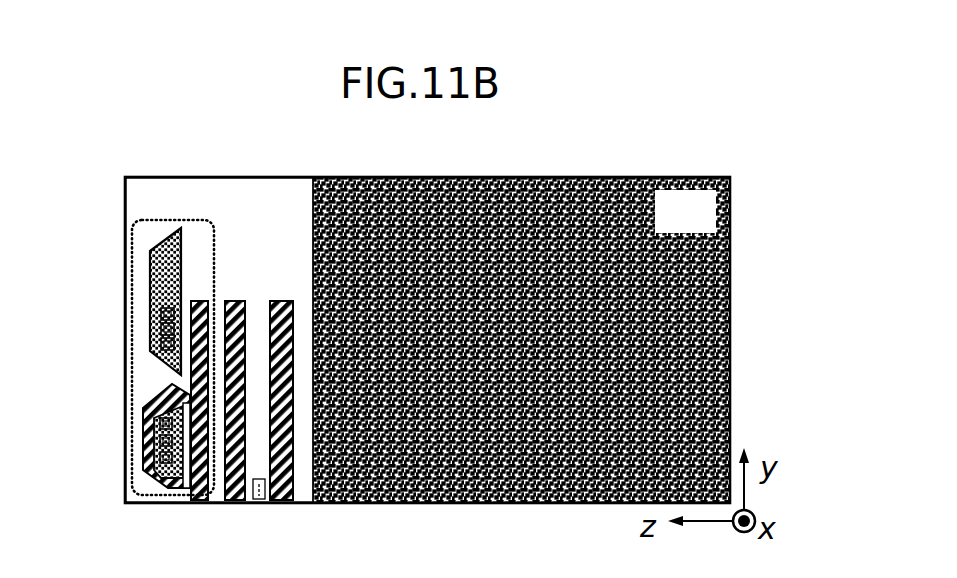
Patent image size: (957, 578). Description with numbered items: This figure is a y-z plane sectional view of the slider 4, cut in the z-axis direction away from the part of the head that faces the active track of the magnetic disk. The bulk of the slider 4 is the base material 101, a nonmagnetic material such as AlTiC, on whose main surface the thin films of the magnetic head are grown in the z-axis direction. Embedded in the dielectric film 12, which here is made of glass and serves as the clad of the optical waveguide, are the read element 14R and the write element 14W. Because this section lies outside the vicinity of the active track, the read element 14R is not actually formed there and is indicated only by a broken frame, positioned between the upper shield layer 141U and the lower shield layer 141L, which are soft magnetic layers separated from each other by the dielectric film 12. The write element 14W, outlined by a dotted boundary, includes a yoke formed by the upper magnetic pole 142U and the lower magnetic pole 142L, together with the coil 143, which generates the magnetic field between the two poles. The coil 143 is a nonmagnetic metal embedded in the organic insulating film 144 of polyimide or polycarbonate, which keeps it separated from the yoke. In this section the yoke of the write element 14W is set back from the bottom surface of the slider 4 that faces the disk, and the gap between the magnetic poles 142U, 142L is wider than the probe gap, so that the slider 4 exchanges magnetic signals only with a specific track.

The slider 4 is at (690, 221).
The dielectric film 12 is at (222, 171).
The read element 14R is at (252, 496).
The write element 14W is at (121, 292).
The base material 101 is at (722, 332).
The upper shield layer 141U is at (223, 494).
The lower shield layer 141L is at (283, 493).
The upper magnetic pole 142U is at (150, 478).
The lower magnetic pole 142L is at (193, 481).
The coil 143 is at (157, 322).
The organic insulating film 144 is at (155, 301).